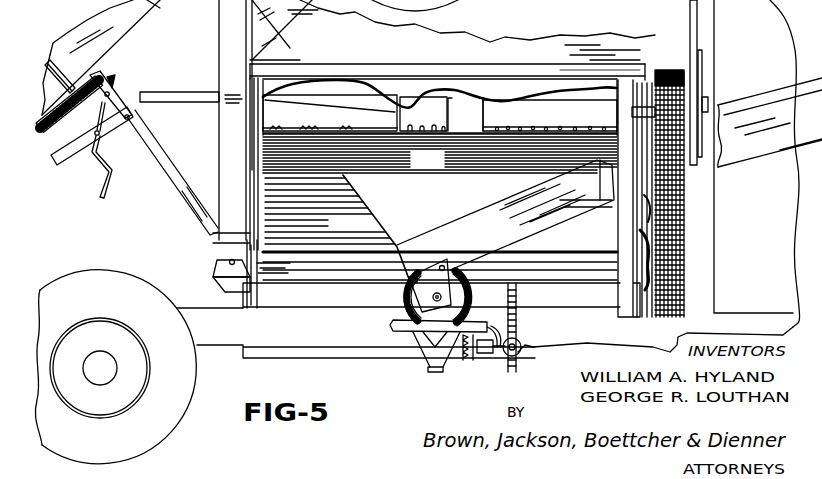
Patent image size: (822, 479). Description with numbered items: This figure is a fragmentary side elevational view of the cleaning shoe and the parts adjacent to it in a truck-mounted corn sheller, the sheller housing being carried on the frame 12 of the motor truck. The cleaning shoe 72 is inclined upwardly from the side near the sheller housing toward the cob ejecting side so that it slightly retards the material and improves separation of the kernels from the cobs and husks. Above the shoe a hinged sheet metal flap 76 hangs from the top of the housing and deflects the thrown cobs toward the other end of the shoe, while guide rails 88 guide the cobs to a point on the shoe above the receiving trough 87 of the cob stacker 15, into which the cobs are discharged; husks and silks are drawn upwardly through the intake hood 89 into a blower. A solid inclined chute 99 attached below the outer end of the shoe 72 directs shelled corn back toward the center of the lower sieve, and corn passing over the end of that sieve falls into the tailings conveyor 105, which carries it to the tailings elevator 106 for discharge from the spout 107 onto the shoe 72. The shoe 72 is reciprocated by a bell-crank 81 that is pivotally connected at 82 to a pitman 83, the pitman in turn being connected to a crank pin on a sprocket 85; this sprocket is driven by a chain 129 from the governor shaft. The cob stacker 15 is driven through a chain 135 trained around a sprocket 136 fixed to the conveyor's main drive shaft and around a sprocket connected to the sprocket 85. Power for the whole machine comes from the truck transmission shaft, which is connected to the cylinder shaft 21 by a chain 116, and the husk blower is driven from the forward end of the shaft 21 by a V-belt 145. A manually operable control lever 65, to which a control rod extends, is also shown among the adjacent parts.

The frame 12 is at (224, 335).
The cob stacker 15 is at (505, 215).
The shaft 21 is at (705, 105).
The control lever 65 is at (640, 68).
The cleaning shoe 72 is at (445, 108).
The flap 76 is at (457, 110).
The bell-crank 81 is at (677, 204).
The pivotal connection 82 is at (680, 212).
The pitman 83 is at (650, 236).
The sprocket 85 is at (638, 300).
The receiving trough 87 is at (388, 202).
The guide rails 88 is at (409, 106).
The intake hood 89 is at (447, 62).
The inclined chute 99 is at (372, 172).
The tailings conveyor 105 is at (358, 240).
The tailings elevator 106 is at (230, 48).
The spout 107 is at (268, 27).
The chain 116 is at (690, 247).
The chain 129 is at (650, 220).
The chain 135 is at (520, 293).
The sprocket 136 is at (503, 360).
The V-belt 145 is at (690, 12).